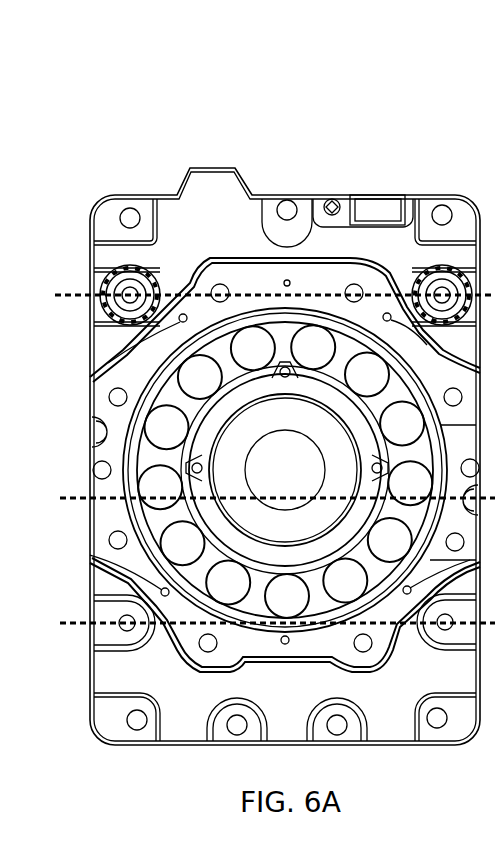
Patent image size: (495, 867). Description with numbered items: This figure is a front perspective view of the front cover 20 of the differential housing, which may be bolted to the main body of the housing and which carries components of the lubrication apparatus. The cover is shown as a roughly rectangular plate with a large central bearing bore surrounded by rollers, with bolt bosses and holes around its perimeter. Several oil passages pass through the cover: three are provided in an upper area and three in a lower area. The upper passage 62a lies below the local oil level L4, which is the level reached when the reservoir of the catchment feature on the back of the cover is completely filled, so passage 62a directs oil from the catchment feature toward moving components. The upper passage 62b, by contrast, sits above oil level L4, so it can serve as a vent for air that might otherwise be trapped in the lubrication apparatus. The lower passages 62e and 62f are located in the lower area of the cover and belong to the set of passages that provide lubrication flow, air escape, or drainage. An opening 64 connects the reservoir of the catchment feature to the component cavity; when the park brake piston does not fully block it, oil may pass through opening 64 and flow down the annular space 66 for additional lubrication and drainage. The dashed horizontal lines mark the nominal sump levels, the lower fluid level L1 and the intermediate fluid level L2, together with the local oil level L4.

The front cover 20 is at (50, 178).
The oil passage 62a is at (108, 344).
The oil passage 62b is at (285, 278).
The oil passage 62e is at (285, 644).
The oil passage 62f is at (108, 576).
The opening 64 is at (275, 370).
The annular space 66 is at (135, 454).
The lower fluid level L1 is at (272, 639).
The intermediate fluid level L2 is at (272, 514).
The oil level L4 is at (272, 283).